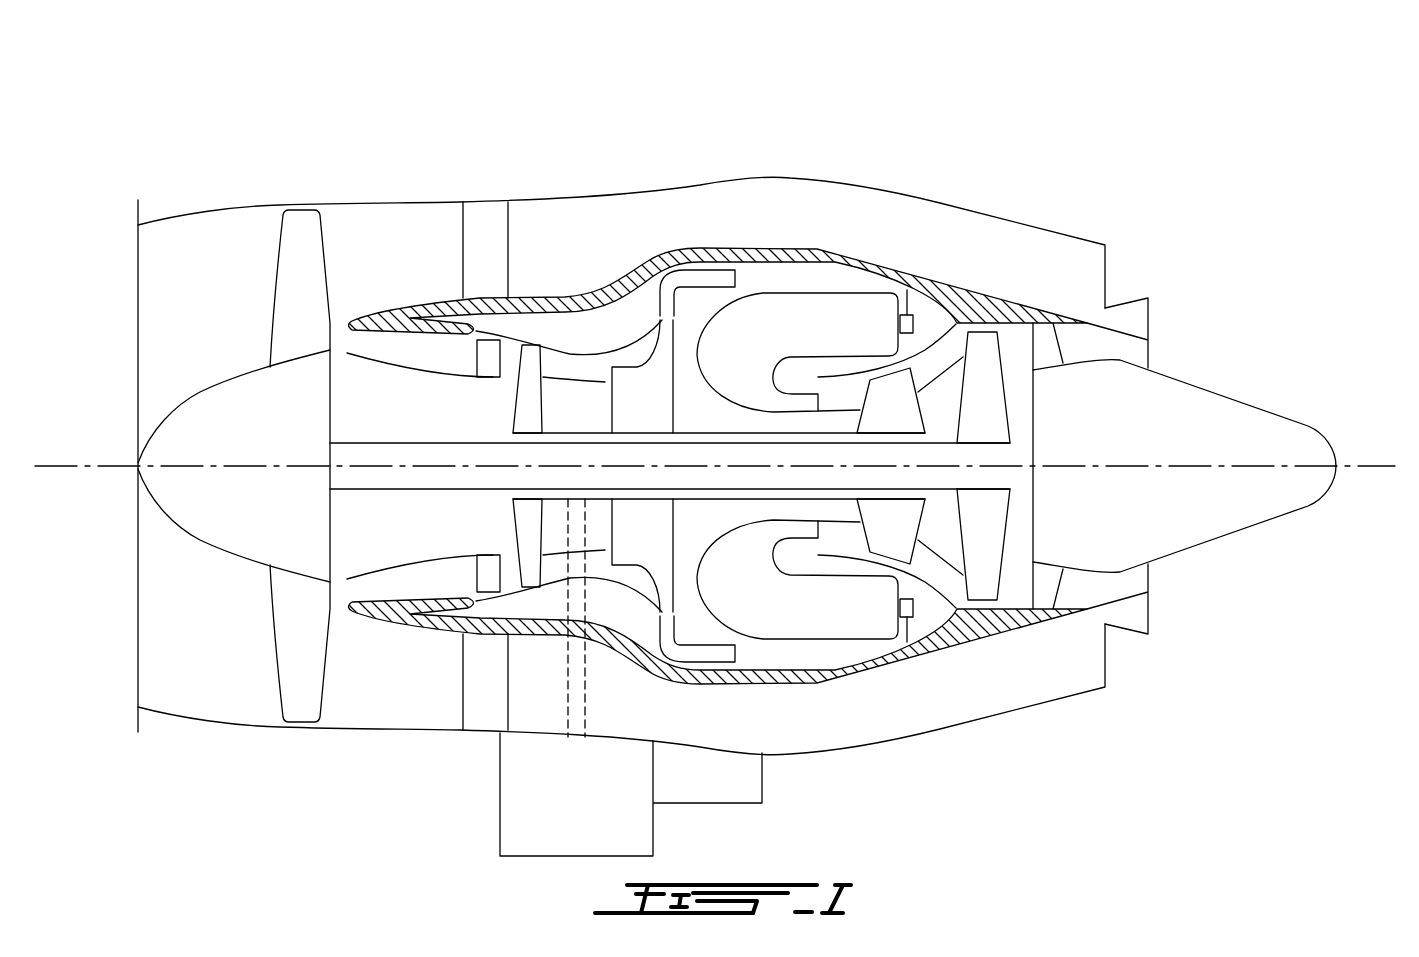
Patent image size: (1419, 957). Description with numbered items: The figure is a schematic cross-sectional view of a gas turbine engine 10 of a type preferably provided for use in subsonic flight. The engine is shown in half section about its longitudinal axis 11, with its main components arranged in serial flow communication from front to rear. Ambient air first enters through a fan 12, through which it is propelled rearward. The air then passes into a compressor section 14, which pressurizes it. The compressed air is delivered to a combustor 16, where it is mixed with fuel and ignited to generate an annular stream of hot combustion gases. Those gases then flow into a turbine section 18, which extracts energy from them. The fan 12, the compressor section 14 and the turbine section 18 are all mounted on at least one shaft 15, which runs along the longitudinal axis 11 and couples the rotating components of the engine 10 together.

The gas turbine engine 10 is at (1065, 108).
The longitudinal axis 11 is at (1375, 462).
The fan 12 is at (302, 635).
The compressor section 14 is at (565, 358).
The shaft 15 is at (943, 443).
The combustor 16 is at (798, 314).
The turbine section 18 is at (943, 489).